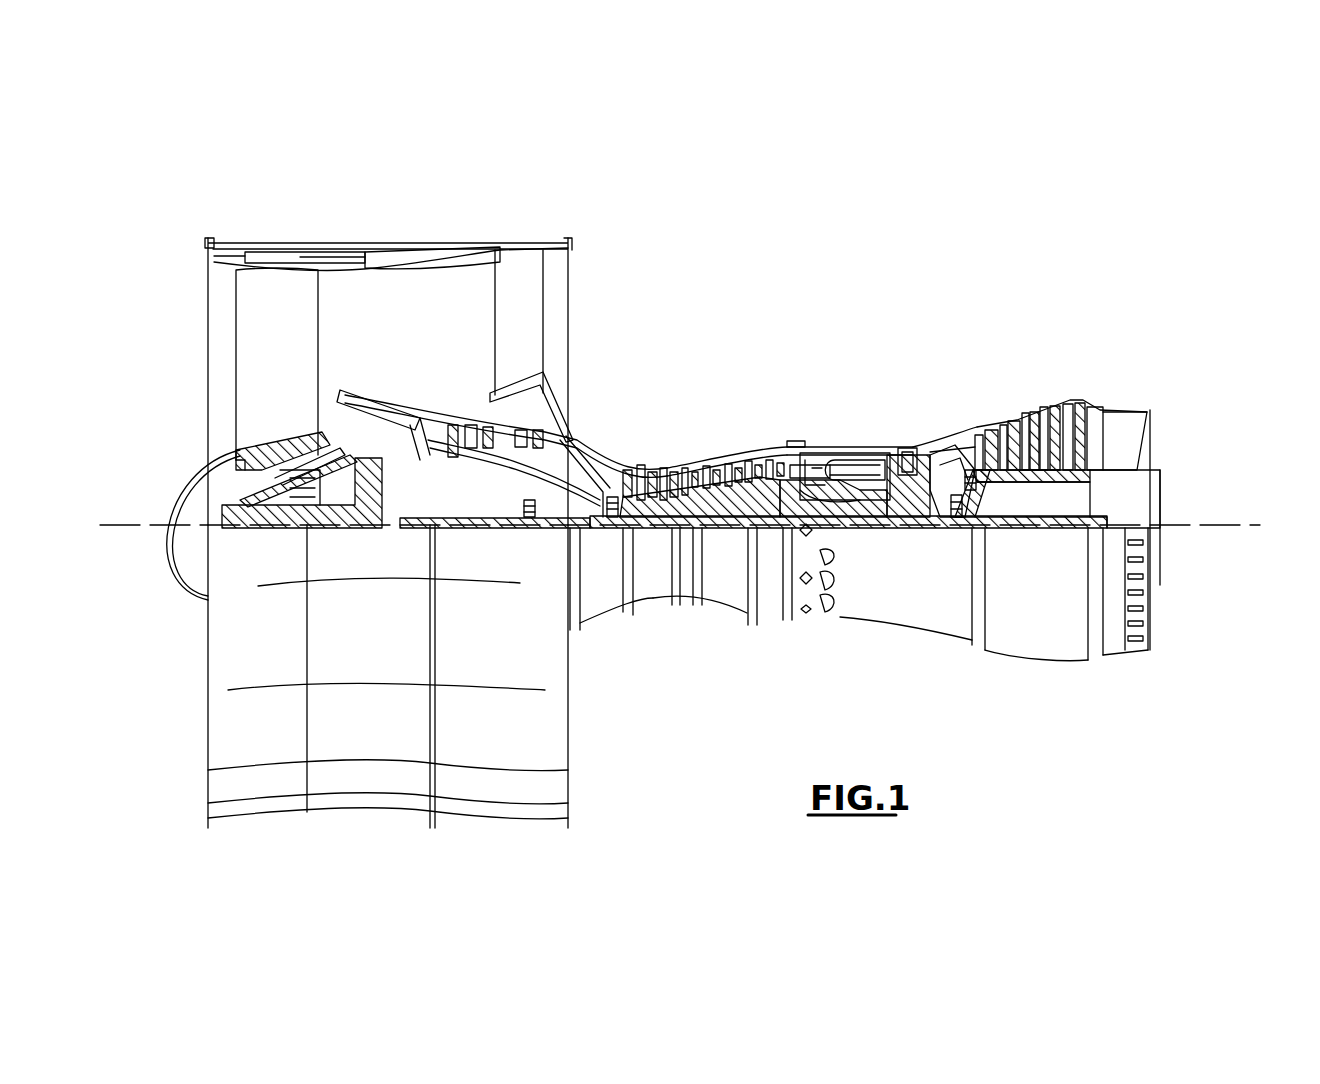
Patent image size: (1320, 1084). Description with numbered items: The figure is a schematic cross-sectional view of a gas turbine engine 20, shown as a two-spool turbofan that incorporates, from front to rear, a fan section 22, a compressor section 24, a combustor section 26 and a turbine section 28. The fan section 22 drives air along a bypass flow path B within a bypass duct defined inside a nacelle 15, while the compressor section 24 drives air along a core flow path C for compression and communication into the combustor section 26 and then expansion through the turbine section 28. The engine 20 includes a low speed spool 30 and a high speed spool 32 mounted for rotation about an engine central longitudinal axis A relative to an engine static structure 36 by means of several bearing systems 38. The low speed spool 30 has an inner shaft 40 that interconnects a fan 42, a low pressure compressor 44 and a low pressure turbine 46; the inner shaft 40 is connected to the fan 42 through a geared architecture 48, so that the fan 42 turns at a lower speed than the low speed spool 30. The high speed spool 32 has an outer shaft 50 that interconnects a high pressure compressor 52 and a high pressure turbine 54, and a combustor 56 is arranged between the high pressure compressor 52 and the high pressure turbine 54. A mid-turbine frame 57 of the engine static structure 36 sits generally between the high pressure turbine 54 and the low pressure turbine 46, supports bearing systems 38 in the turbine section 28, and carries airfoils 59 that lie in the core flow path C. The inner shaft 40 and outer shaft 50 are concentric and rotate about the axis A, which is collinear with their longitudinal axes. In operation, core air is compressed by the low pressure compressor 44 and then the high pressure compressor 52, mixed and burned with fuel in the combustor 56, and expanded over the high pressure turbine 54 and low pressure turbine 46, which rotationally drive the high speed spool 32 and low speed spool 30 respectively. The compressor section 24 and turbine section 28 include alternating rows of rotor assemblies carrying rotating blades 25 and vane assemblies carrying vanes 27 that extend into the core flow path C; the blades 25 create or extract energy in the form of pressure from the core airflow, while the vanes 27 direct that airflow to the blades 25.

The nacelle 15 is at (388, 250).
The gas turbine engine 20 is at (855, 290).
The fan section 22 is at (321, 238).
The compressor section 24 is at (622, 432).
The rotating blades 25 is at (450, 428).
The combustor section 26 is at (845, 425).
The vanes 27 is at (470, 435).
The turbine section 28 is at (1002, 335).
The low speed spool 30 is at (745, 532).
The high speed spool 32 is at (775, 468).
The engine static structure 36 is at (767, 602).
The bearing systems 38 is at (530, 520).
The inner shaft 40 is at (598, 545).
The fan 42 is at (277, 364).
The low pressure compressor 44 is at (505, 440).
The low pressure turbine 46 is at (1036, 420).
The geared architecture 48 is at (393, 522).
The outer shaft 50 is at (855, 528).
The high pressure compressor 52 is at (700, 490).
The high pressure turbine 54 is at (915, 458).
The combustor 56 is at (843, 470).
The mid-turbine frame 57 is at (958, 435).
The airfoils 59 is at (980, 480).
The engine central longitudinal axis A is at (1238, 525).
The bypass flow path B is at (350, 318).
The core flow path C is at (392, 426).